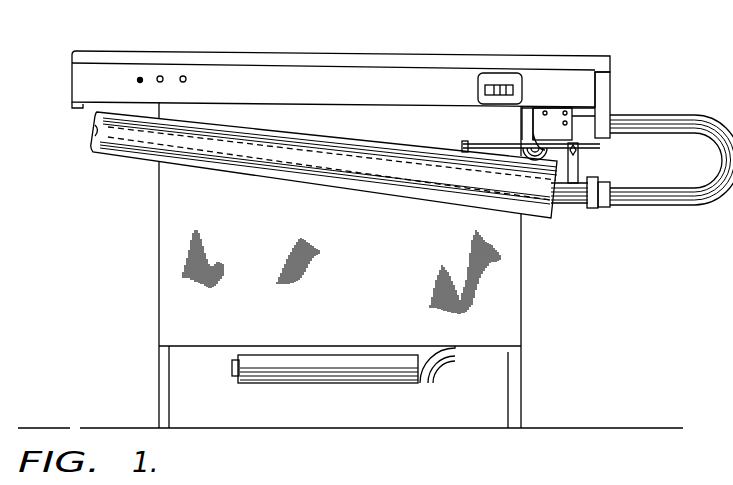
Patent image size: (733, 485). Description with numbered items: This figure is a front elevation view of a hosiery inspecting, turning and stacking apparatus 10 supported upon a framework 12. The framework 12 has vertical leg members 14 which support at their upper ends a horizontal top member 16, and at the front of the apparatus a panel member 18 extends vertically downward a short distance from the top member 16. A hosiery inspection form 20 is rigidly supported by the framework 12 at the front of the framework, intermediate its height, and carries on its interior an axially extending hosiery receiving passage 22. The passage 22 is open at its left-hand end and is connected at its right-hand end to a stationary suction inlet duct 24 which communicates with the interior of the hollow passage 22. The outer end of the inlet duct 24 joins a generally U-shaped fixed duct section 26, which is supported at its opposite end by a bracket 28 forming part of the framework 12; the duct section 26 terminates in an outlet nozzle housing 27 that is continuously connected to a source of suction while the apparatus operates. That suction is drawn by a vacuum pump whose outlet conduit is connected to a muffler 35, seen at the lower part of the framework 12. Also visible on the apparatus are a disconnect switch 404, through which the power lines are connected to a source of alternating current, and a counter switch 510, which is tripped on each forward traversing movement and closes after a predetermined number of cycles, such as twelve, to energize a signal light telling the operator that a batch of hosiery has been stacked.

The hosiery inspecting, turning and stacking apparatus 10 is at (133, 220).
The framework 12 is at (158, 357).
The vertical leg members 14 is at (158, 398).
The horizontal top member 16 is at (293, 57).
The panel member 18 is at (376, 77).
The hosiery inspection form 20 is at (123, 157).
The hosiery receiving passage 22 is at (184, 133).
The stationary suction inlet duct 24 is at (574, 205).
The U-shaped fixed duct section 26 is at (645, 207).
The outlet nozzle housing 27 is at (584, 140).
The bracket 28 is at (612, 103).
The muffler 35 is at (344, 383).
The disconnect switch 404 is at (138, 79).
The counter switch 510 is at (478, 82).